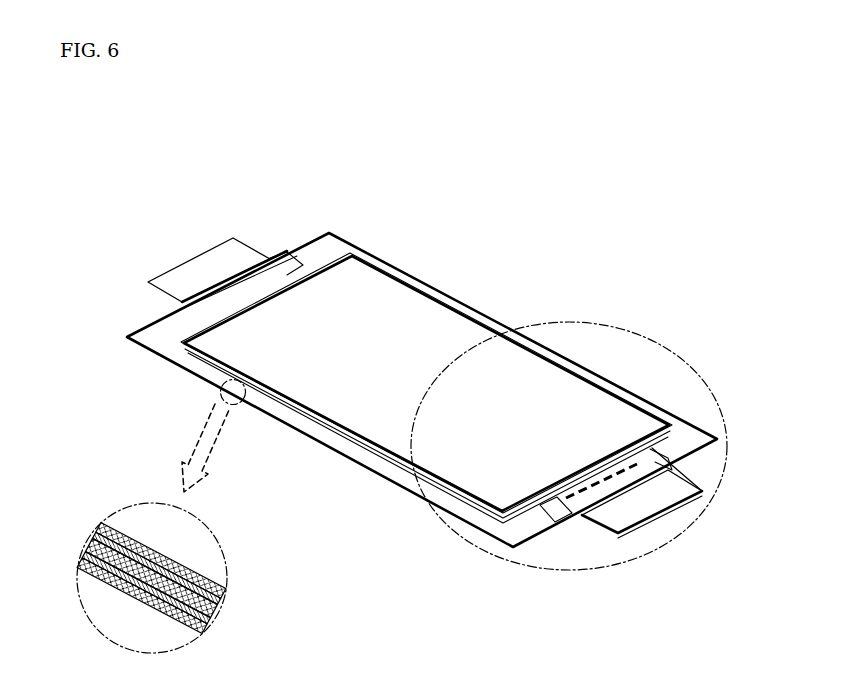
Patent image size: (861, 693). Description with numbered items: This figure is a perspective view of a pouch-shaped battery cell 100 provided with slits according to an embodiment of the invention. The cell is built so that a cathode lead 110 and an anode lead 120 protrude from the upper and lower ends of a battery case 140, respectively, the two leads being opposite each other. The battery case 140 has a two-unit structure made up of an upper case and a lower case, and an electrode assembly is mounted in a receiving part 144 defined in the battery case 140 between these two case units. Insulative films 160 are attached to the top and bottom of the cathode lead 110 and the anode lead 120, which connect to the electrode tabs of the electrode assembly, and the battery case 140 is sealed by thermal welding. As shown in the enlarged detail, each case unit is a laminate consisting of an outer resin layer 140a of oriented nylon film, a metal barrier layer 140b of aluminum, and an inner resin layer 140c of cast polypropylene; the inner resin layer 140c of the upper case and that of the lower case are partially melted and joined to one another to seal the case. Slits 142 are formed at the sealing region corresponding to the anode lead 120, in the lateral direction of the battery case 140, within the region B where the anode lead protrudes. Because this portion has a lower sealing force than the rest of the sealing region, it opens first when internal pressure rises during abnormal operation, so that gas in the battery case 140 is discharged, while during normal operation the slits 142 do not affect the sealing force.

The pouch-shaped battery cell 100 is at (106, 137).
The cathode lead 110 is at (207, 263).
The anode lead 120 is at (688, 512).
The battery case 140 is at (532, 521).
The outer resin layer 140a is at (215, 613).
The metal barrier layer 140b is at (225, 592).
The inner resin layer 140c is at (215, 570).
The slits 142 is at (592, 483).
The receiving part 144 is at (417, 298).
The insulative films 160 is at (678, 463).
The region B is at (700, 366).